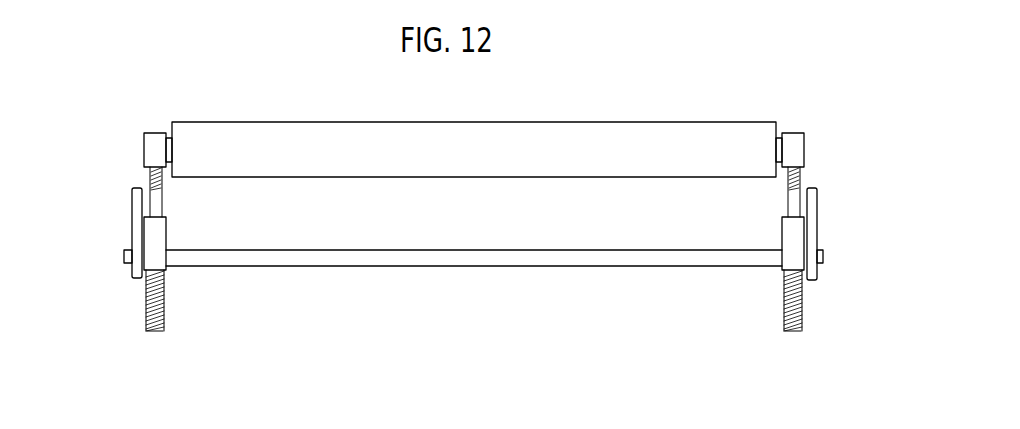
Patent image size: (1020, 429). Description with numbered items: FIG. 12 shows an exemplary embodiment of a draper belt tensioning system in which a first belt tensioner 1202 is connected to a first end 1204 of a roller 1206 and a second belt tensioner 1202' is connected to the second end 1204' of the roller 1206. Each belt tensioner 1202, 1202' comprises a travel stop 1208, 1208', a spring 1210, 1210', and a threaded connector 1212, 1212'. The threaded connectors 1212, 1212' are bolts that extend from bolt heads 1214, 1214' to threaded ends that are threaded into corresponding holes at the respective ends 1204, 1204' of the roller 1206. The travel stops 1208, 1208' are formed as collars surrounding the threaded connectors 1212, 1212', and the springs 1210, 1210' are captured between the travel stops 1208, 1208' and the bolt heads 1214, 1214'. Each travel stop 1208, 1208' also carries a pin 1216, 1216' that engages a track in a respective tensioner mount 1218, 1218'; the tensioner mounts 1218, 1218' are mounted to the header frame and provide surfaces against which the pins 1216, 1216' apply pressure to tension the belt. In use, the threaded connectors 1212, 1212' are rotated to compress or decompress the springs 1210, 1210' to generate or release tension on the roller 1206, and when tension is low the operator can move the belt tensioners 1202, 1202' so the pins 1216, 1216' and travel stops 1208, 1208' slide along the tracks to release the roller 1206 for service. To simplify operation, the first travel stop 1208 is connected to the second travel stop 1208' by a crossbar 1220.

The first belt tensioner 1202 is at (68, 259).
The second belt tensioner 1202' is at (884, 228).
The first end of roller 1204 is at (138, 125).
The second end of roller 1204' is at (824, 126).
The roller 1206 is at (381, 130).
The travel stop 1208 is at (193, 234).
The travel stop 1208' is at (752, 240).
The spring 1210 is at (197, 300).
The spring 1210' is at (757, 305).
The threaded connector 1212 is at (116, 175).
The threaded connector 1212' is at (840, 173).
The bolt head 1214 is at (175, 353).
The bolt head 1214' is at (760, 363).
The pin 1216 is at (105, 293).
The pin 1216' is at (858, 290).
The tensioner mount 1218 is at (94, 233).
The tensioner mount 1218' is at (857, 229).
The crossbar 1220 is at (370, 258).